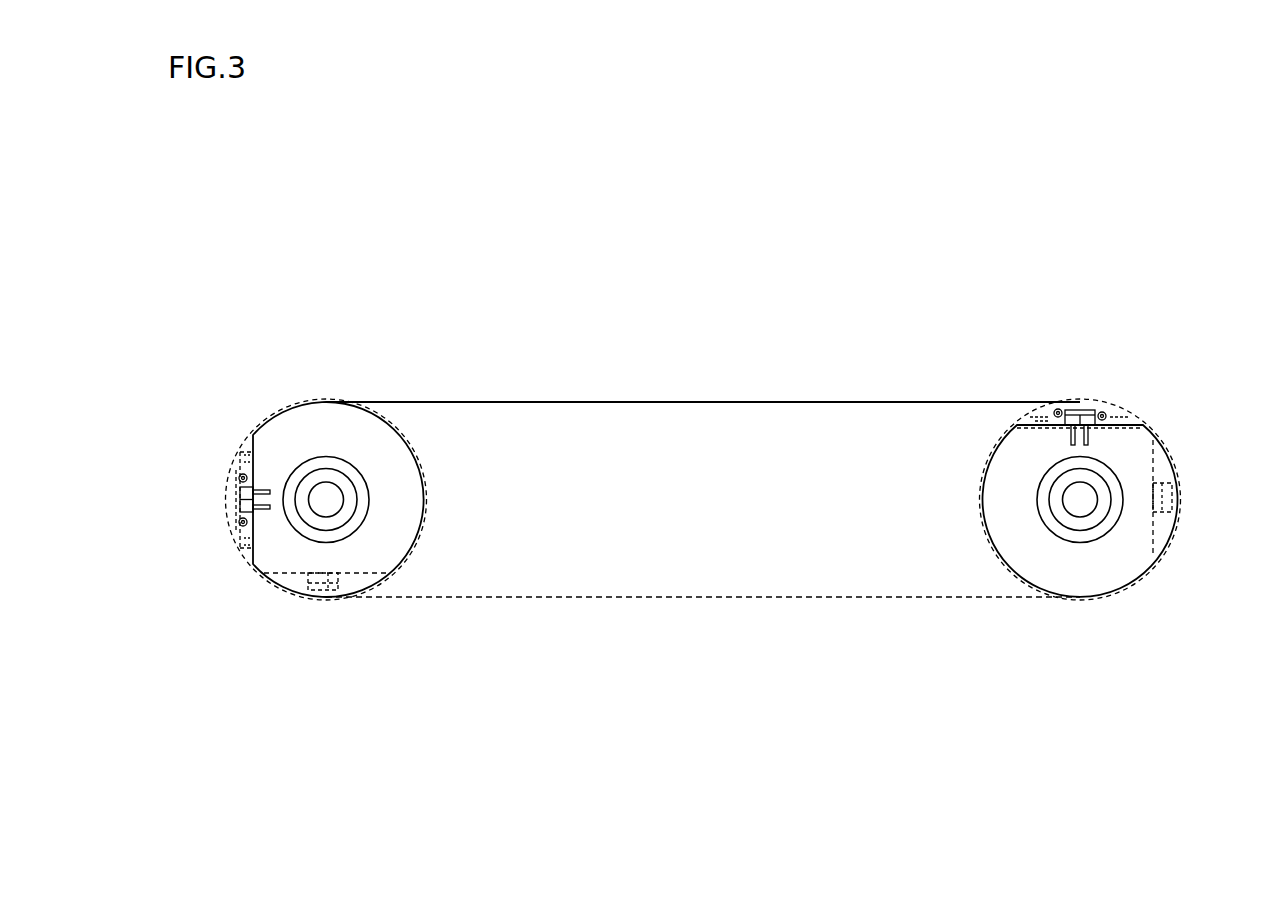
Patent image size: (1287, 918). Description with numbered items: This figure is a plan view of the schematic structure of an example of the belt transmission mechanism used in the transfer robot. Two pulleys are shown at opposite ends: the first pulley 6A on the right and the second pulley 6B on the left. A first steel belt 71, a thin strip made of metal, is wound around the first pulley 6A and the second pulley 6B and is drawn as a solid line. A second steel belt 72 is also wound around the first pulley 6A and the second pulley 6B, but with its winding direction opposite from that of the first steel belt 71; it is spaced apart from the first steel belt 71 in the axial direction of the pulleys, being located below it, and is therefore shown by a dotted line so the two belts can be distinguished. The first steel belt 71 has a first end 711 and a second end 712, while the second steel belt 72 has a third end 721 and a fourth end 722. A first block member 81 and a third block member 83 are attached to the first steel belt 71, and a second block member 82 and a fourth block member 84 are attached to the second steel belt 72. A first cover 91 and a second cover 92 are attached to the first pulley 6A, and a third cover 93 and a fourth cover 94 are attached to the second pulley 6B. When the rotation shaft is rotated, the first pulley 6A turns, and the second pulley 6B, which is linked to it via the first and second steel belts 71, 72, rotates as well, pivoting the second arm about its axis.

The first steel belt 71 is at (695, 402).
The second steel belt 72 is at (708, 598).
The first pulley 6A is at (1008, 502).
The second pulley 6B is at (402, 505).
The first block member 81 is at (1082, 410).
The second block member 82 is at (1172, 504).
The third block member 83 is at (240, 505).
The fourth block member 84 is at (335, 592).
The first cover 91 is at (1120, 421).
The second cover 92 is at (1160, 470).
The third cover 93 is at (243, 470).
The fourth cover 94 is at (295, 580).
The first end 711 is at (1072, 432).
The second end 712 is at (262, 490).
The third end 721 is at (1150, 507).
The fourth end 722 is at (338, 573).